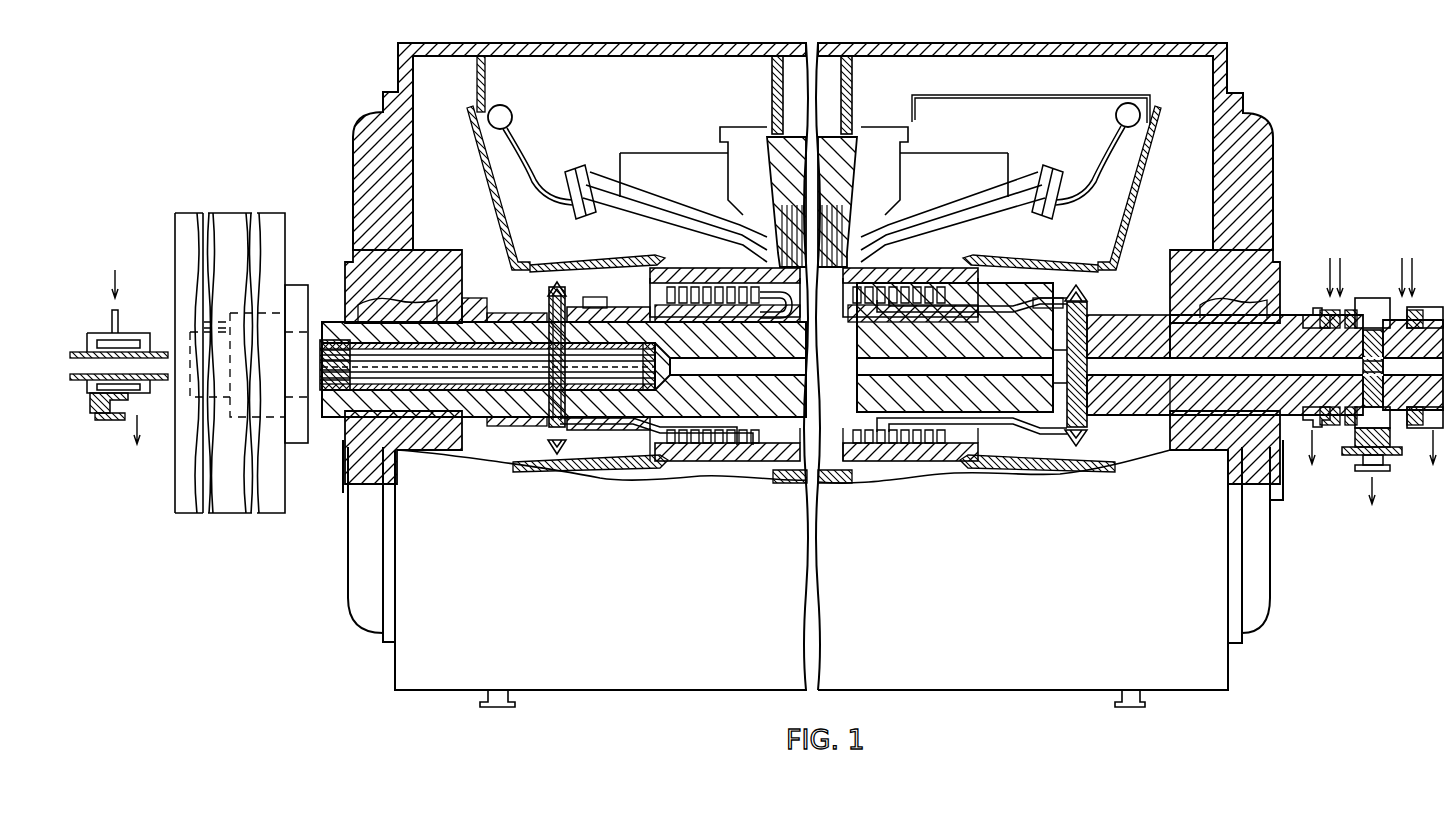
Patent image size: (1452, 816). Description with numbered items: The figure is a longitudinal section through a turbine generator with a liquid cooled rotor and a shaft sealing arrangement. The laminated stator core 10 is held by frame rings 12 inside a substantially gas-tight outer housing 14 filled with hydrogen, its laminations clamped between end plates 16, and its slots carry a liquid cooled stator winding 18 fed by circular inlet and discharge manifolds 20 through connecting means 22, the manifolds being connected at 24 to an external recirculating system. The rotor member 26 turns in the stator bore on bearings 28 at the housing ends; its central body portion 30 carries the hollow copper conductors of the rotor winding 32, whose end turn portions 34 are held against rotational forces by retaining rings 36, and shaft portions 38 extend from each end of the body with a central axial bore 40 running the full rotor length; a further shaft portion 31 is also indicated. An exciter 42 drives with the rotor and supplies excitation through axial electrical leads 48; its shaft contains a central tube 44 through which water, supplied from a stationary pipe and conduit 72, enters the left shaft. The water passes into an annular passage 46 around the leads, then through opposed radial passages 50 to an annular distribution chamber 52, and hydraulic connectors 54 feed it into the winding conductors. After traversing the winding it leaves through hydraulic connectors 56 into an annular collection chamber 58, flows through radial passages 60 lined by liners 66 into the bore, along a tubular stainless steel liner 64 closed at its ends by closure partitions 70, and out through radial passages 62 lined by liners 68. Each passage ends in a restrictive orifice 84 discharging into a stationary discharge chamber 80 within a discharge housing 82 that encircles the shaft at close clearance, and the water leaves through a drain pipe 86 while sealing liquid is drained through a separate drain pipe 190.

The stator core 10 is at (840, 135).
The frame rings 12 is at (772, 76).
The outer housing 14 is at (528, 43).
The end plates 16 is at (893, 127).
The stator winding 18 is at (612, 216).
The inlet and discharge manifolds 20 is at (573, 166).
The connecting means 22 is at (512, 110).
The connection to external recirculating system 24 is at (512, 704).
The rotor member 26 is at (976, 432).
The bearings 28 is at (347, 285).
The central body portion 30 is at (870, 382).
The shaft portion 31 is at (1130, 402).
The rotor winding 32 is at (792, 468).
The end turn portions 34 is at (655, 294).
The retaining rings 36 is at (690, 276).
The shaft portions 38 is at (503, 313).
The central axial bore 40 is at (692, 357).
The exciter 42 is at (230, 222).
The central tube 44 is at (158, 350).
The annular passage 46 is at (330, 432).
The axial electrical leads 48 is at (320, 365).
The radial passages 50 is at (551, 328).
The annular distribution chamber 52 is at (570, 312).
The hydraulic connectors 54 is at (640, 426).
The hydraulic connectors 56 is at (1010, 422).
The annular collection chamber 58 is at (1066, 302).
The radial passages 60 is at (1088, 374).
The radial passages 62 is at (1366, 368).
The tubular stainless steel liner 64 is at (1164, 366).
The liner 66 is at (1077, 340).
The liner 68 is at (1322, 320).
The closure partitions 70 is at (1052, 368).
The stationary pipe and conduit 72 is at (84, 385).
The discharge chamber 80 is at (1380, 305).
The discharge housing 82 is at (1355, 298).
The restrictive orifice 84 is at (1415, 312).
The drain pipe 86 is at (1378, 460).
The drain pipe 190 is at (1358, 471).